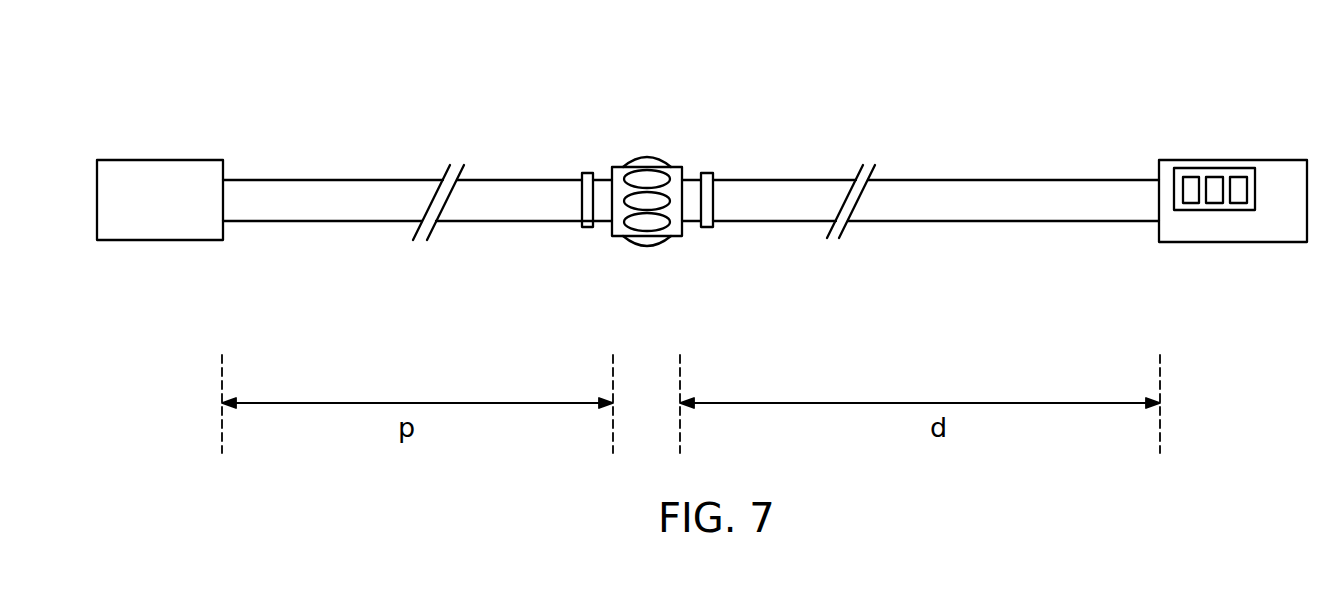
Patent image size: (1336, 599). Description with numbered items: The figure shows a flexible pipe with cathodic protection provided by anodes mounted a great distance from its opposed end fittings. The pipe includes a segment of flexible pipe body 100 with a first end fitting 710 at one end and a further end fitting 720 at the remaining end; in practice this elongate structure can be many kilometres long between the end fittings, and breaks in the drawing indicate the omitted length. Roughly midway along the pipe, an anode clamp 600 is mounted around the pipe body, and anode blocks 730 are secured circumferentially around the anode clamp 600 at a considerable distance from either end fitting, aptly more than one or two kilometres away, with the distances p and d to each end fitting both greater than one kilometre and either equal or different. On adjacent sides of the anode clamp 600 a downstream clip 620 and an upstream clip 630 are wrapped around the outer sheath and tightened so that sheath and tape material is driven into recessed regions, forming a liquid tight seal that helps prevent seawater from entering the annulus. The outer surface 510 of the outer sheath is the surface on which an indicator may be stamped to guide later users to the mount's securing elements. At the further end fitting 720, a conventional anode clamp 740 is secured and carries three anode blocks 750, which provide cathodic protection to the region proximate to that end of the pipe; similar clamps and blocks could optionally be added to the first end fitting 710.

The flexible pipe body 100 is at (701, 184).
The outer surface of the outer sheath 510 is at (508, 208).
The anode clamp 600 is at (673, 170).
The downstream clip 620 is at (587, 228).
The upstream clip 630 is at (707, 228).
The first end fitting 710 is at (155, 222).
The further end fitting 720 is at (1223, 223).
The anode blocks 730 is at (648, 162).
The conventional anode clamp 740 is at (1180, 173).
The anode blocks 750 is at (1192, 190).